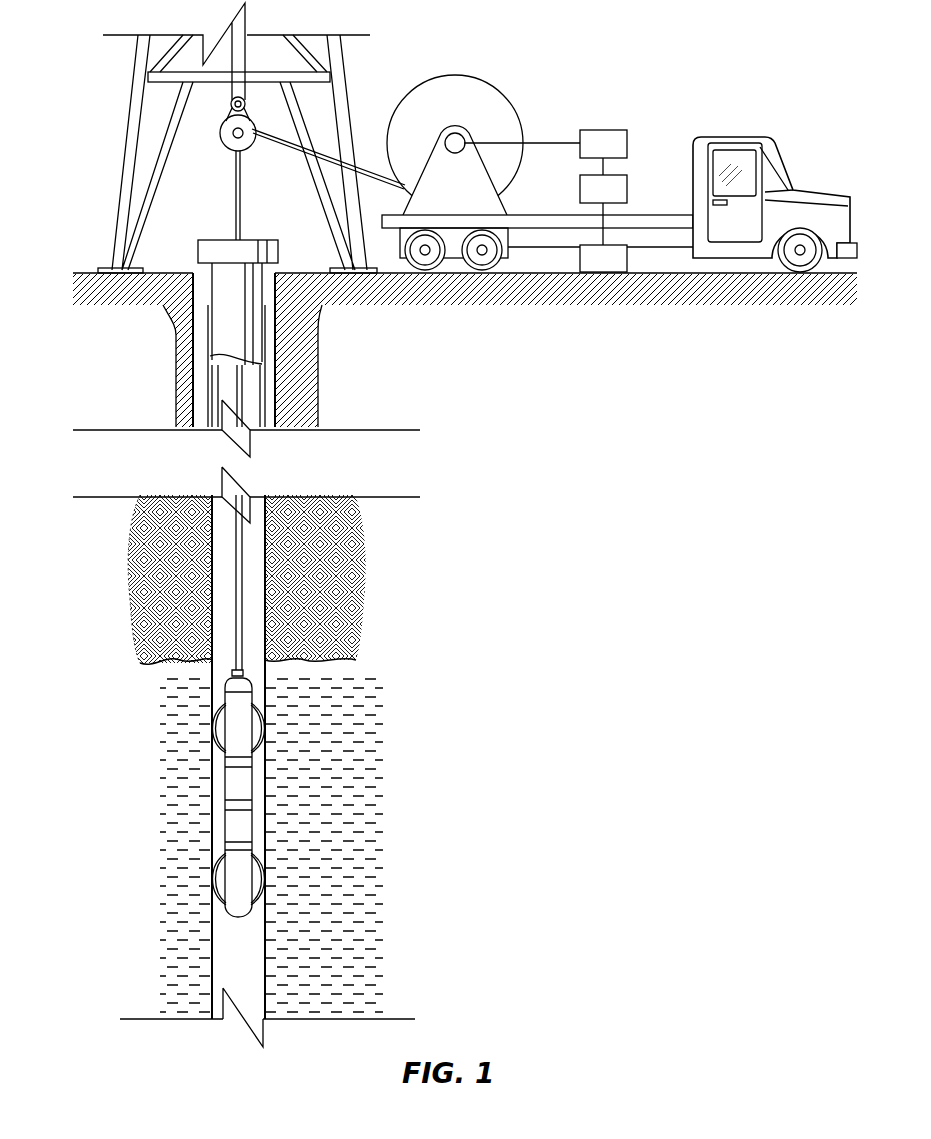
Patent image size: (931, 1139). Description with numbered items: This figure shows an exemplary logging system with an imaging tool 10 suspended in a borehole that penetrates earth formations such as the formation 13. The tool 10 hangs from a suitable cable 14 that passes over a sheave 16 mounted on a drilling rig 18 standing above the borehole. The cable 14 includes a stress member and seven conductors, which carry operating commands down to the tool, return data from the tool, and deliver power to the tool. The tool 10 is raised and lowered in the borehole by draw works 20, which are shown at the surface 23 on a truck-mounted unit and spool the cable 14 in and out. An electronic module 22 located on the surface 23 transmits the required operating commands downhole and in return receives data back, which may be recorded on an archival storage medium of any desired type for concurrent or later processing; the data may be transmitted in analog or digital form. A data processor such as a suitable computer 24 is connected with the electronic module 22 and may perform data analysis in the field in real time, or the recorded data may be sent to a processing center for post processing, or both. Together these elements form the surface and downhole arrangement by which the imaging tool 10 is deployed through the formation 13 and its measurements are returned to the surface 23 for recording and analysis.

The imaging tool 10 is at (254, 786).
The earth formation 13 is at (392, 613).
The cable 14 is at (235, 225).
The sheave 16 is at (218, 133).
The drilling rig 18 is at (128, 82).
The draw works 20 is at (455, 75).
The electronic module 22 is at (615, 130).
The surface 23 is at (88, 273).
The computer 24 is at (616, 176).